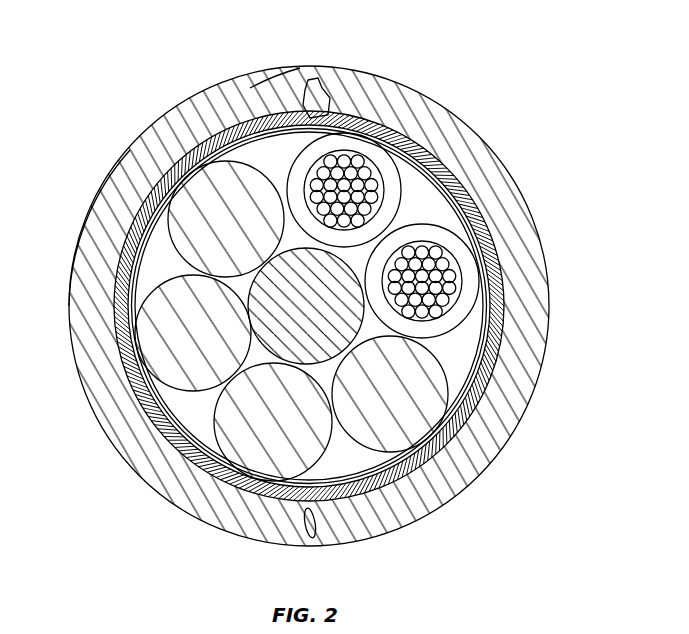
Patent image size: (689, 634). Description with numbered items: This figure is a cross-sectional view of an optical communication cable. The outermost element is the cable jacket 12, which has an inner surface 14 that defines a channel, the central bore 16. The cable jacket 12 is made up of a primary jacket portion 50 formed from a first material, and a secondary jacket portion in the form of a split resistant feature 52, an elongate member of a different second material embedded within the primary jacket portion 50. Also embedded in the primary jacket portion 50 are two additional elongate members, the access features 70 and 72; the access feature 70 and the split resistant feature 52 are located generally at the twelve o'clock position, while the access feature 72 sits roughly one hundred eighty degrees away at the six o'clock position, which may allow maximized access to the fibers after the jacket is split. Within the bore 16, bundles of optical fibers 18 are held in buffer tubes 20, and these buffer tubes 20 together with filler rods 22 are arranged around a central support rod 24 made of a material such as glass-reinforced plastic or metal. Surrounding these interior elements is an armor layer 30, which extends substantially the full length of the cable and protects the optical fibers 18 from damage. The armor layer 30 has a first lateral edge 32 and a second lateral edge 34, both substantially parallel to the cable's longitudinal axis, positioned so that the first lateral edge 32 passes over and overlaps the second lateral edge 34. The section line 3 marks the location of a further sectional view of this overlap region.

The section line 3- 3 is at (354, 38).
The cable jacket 12 is at (95, 345).
The inner surface 14 is at (164, 170).
The central bore 16 is at (355, 458).
The optical fibers 18 is at (372, 193).
The buffer tubes 20 is at (375, 158).
The filler rods 22 is at (183, 240).
The central support rod 24 is at (290, 340).
The armor layer 30 is at (497, 345).
The first lateral edge 32 is at (320, 105).
The second lateral edge 34 is at (367, 147).
The primary jacket portion 50 is at (108, 215).
The split resistant feature 52 is at (304, 100).
The access feature 70 is at (322, 92).
The access feature 72 is at (316, 528).